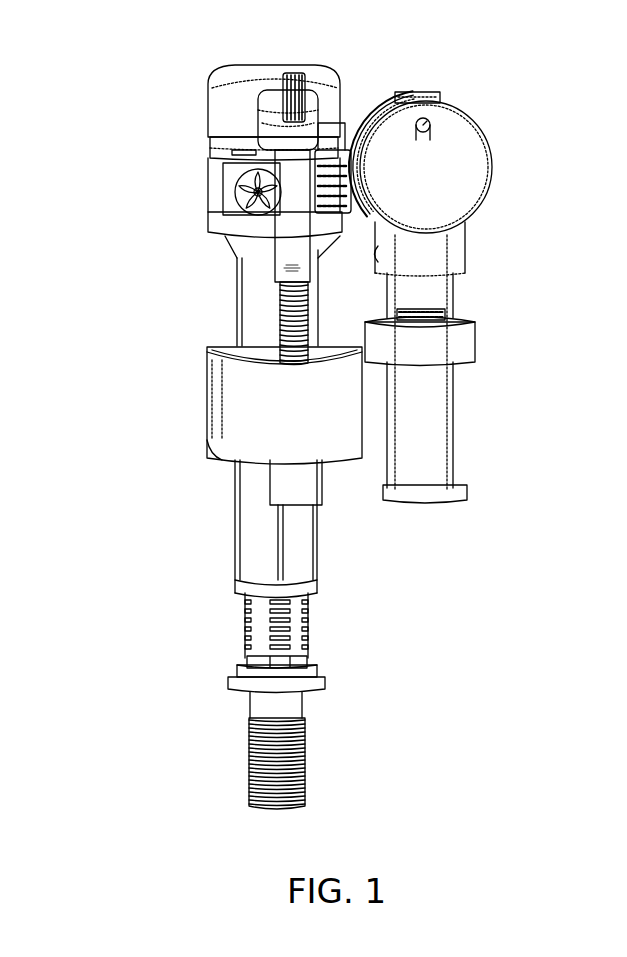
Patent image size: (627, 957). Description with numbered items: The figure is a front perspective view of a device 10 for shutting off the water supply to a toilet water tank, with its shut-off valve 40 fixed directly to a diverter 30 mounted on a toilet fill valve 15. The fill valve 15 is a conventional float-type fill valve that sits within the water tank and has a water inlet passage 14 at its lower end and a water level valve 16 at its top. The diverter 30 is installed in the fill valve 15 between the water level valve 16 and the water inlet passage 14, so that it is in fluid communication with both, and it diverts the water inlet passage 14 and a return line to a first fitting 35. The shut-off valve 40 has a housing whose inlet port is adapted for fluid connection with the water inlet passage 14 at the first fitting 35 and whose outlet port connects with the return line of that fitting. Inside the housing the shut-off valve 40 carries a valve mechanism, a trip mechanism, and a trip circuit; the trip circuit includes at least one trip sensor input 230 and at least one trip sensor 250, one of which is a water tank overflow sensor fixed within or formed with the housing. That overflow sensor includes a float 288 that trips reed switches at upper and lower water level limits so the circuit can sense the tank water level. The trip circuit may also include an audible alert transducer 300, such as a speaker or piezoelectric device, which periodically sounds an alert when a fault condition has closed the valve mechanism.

The device 10 is at (500, 97).
The water inlet passage 14 is at (265, 551).
The toilet fill valve 15 is at (205, 298).
The water level valve 16 is at (212, 118).
The diverter 30 is at (222, 187).
The first fitting 35 is at (333, 157).
The shut-off valve 40 is at (500, 203).
The trip sensor input 230 is at (420, 183).
The trip sensor 250 is at (420, 352).
The float 288 is at (425, 318).
The audible alert transducer 300 is at (472, 124).